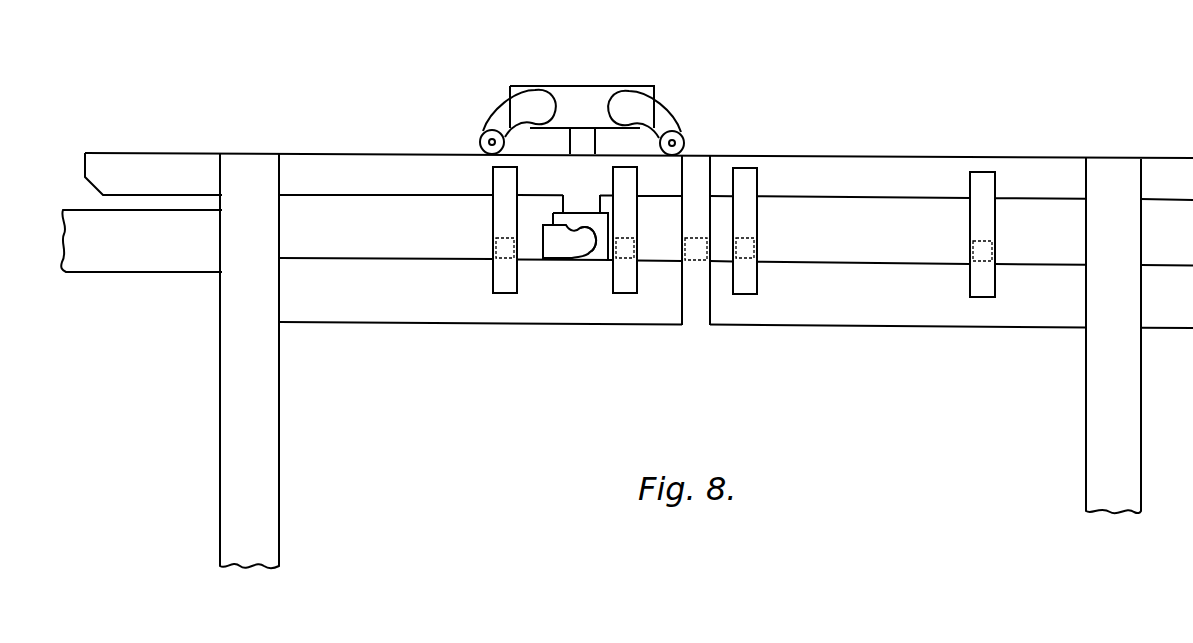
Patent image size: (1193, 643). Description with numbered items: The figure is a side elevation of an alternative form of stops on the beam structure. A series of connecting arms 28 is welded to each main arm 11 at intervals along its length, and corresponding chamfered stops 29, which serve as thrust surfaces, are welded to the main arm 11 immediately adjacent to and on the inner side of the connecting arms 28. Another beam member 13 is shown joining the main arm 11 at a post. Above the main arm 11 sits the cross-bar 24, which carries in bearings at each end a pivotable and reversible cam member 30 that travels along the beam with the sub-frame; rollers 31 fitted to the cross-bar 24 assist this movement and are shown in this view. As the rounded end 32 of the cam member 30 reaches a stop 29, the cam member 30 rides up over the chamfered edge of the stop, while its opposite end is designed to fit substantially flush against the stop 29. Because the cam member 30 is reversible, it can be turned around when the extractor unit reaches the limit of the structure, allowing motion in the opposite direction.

The main arm 11 is at (143, 166).
The cross beam 13 is at (128, 259).
The cross-bar 24 is at (578, 96).
The connecting arm 28 is at (503, 284).
The chamfered stop 29 is at (688, 258).
The cam member 30 is at (558, 250).
The roller 31 is at (493, 127).
The rounded end 32 is at (599, 255).